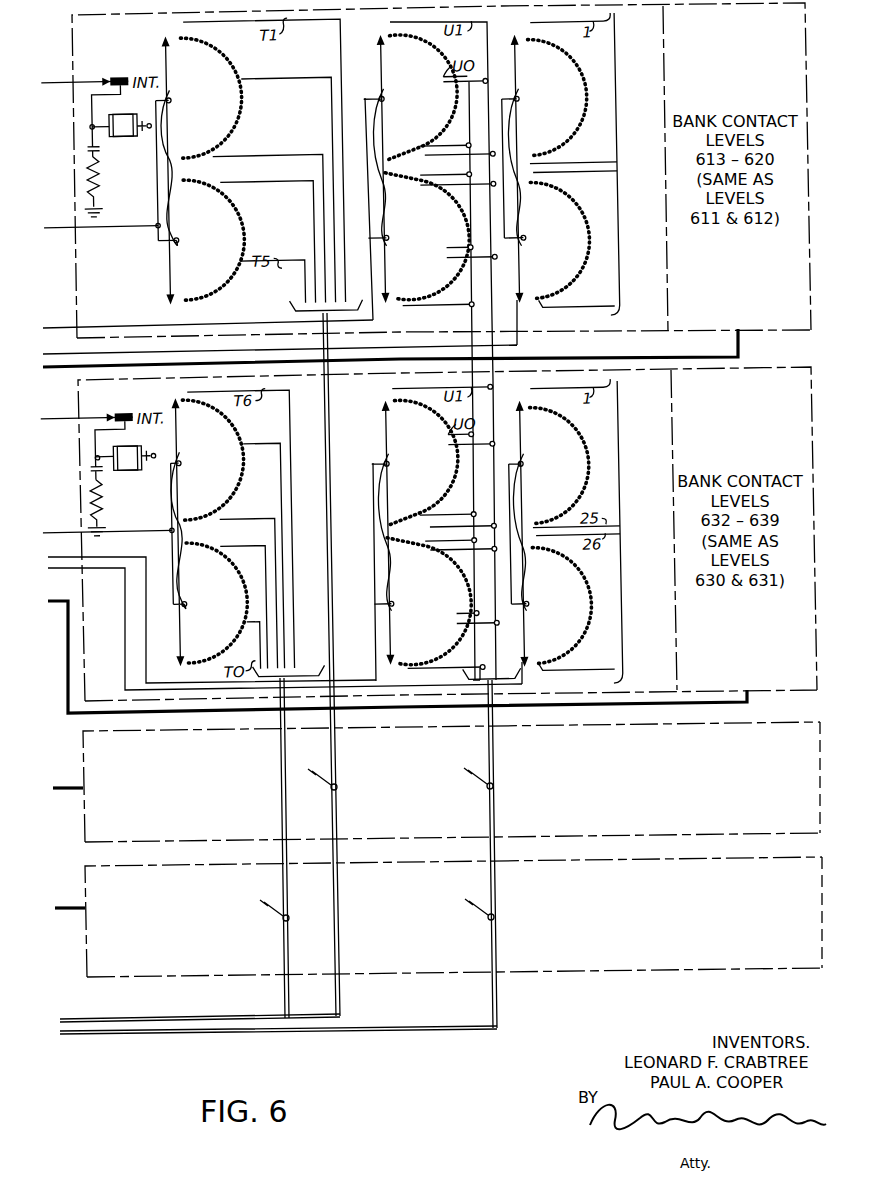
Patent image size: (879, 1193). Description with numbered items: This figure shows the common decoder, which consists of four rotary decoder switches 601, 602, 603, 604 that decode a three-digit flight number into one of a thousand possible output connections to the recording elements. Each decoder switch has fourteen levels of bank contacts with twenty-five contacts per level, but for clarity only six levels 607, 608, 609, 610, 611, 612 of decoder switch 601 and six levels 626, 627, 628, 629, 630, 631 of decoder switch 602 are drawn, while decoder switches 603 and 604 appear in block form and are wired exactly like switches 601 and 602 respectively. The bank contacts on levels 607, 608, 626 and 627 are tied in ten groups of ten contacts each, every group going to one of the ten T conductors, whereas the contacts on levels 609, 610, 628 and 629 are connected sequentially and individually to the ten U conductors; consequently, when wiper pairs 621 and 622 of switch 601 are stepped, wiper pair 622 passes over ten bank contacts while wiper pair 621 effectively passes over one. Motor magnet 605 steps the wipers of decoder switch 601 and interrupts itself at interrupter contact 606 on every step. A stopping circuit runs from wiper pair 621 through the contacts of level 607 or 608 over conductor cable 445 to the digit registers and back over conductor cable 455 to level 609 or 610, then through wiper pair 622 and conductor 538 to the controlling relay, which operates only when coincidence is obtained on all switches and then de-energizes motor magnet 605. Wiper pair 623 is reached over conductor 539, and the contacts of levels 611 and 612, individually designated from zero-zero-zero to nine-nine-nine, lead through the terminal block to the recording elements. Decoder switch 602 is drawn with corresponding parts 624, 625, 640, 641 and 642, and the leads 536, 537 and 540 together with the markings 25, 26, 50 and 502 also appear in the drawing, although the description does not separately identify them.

The decoder switch 601 is at (112, 40).
The decoder switch 602 is at (118, 403).
The decoder switch 603 is at (125, 760).
The decoder switch 604 is at (128, 895).
The motor magnet 605 is at (122, 152).
The interrupter contact 606 is at (120, 76).
The bank contact level 607 is at (208, 97).
The bank contact level 608 is at (214, 239).
The bank contact level 609 is at (421, 97).
The bank contact level 610 is at (427, 235).
The bank contact level 611 is at (558, 96).
The bank contact level 612 is at (560, 239).
The wiper pair 621 is at (176, 170).
The wiper pair 622 is at (384, 169).
The wiper pair 623 is at (524, 168).
The stepping motor 624 is at (126, 484).
The interrupter contacts 625 is at (127, 412).
The bank contact level 626 is at (212, 459).
The bank contact level 627 is at (217, 602).
The bank contact level 628 is at (422, 462).
The bank contact level 629 is at (429, 600).
The bank contact level 630 is at (560, 465).
The bank contact level 631 is at (562, 605).
The wiper 640 is at (189, 532).
The wiper 641 is at (390, 532).
The wiper 642 is at (530, 533).
The conductor 25 is at (604, 161).
The conductor 26 is at (603, 170).
The conductor 50 is at (604, 300).
The conductor 502 is at (579, 662).
The conductor 536 is at (70, 82).
The conductor 537 is at (70, 228).
The conductor 538 is at (70, 330).
The conductor 539 is at (70, 356).
The conductor 540 is at (72, 368).
The conductor cable 445 is at (110, 1020).
The conductor cable 455 is at (203, 1038).